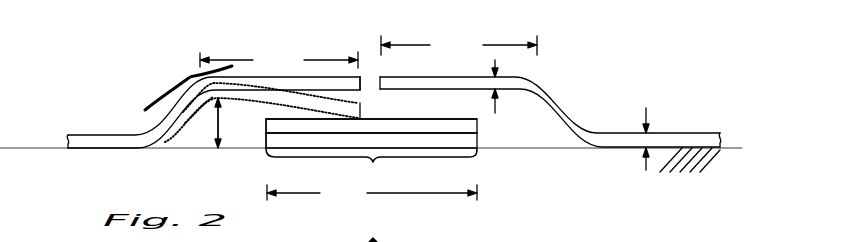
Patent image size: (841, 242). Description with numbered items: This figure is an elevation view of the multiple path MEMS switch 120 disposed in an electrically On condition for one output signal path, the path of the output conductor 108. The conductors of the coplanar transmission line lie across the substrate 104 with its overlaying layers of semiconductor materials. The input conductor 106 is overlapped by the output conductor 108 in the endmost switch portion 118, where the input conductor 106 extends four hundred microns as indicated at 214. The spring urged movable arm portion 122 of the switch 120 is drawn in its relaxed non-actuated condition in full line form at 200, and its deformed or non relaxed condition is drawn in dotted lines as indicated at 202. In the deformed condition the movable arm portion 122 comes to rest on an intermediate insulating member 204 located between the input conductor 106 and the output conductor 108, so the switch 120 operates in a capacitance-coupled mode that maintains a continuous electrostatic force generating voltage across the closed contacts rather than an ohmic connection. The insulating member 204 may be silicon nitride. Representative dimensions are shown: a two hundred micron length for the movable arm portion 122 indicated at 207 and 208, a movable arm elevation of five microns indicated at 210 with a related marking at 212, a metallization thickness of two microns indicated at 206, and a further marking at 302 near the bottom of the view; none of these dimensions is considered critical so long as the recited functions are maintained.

The substrate 104 is at (703, 162).
The input conductor 106 is at (460, 125).
The output conductor 108 is at (102, 142).
The switch portion 118 is at (371, 151).
The switch 120 is at (350, 24).
The movable arm portion 122 is at (188, 85).
The relaxed condition of movable arm portion 200 is at (370, 62).
The deformed condition 202 is at (371, 110).
The insulating member 204 is at (266, 121).
The metallization thickness dimension 206 is at (646, 151).
The movable arm length dimension 207 is at (275, 58).
The movable arm length dimension 208 is at (452, 42).
The movable arm elevation dimension 210 is at (218, 130).
The deflection dimension 212 is at (240, 128).
The conductor overlap dimension 214 is at (333, 200).
The actuator 302 is at (372, 231).